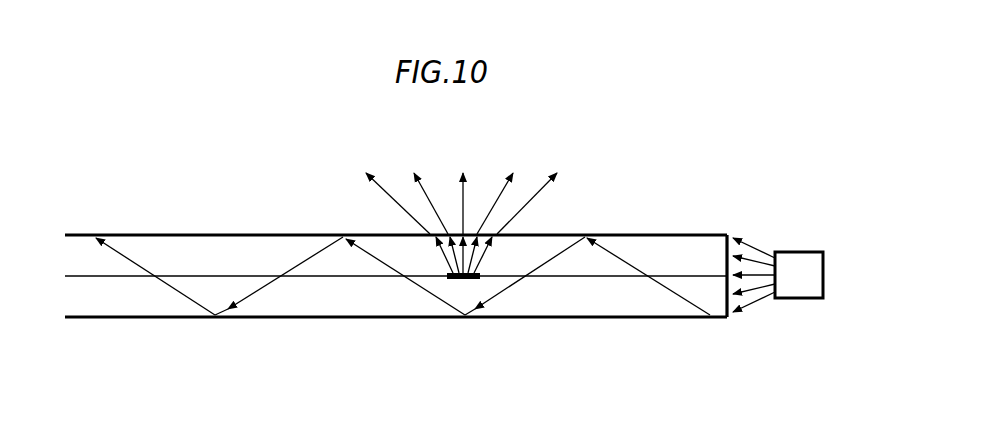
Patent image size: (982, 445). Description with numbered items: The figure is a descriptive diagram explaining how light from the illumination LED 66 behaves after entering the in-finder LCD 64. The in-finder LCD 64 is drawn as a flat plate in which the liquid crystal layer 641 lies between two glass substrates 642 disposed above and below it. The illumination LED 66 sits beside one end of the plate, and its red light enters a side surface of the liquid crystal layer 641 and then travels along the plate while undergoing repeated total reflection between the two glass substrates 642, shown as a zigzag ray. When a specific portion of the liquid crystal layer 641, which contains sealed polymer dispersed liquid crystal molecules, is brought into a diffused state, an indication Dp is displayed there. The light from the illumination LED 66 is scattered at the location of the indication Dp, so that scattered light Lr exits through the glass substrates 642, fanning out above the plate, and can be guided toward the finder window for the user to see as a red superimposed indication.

The in-finder LCD 64 is at (396, 278).
The liquid crystal layer 641 is at (607, 300).
The glass substrates 642 is at (242, 232).
The illumination LED 66 is at (797, 300).
The indication Dp is at (458, 281).
The scattered light Lr is at (562, 168).